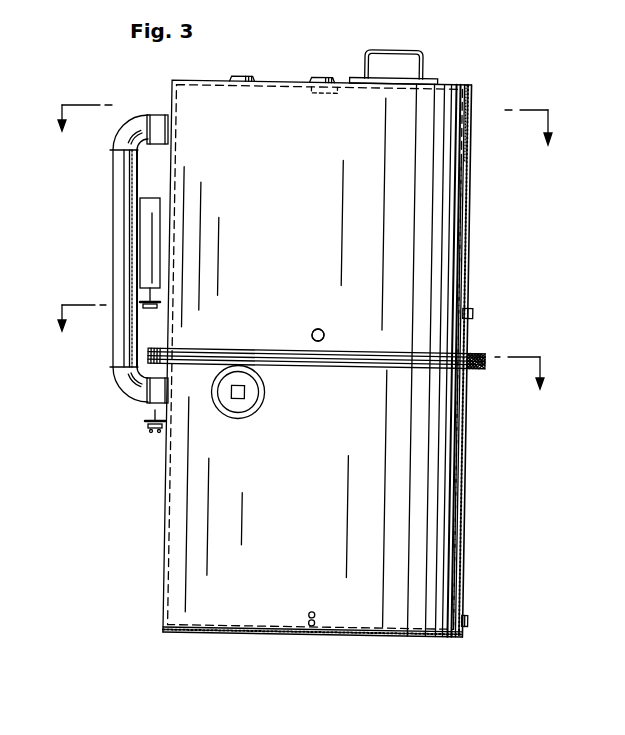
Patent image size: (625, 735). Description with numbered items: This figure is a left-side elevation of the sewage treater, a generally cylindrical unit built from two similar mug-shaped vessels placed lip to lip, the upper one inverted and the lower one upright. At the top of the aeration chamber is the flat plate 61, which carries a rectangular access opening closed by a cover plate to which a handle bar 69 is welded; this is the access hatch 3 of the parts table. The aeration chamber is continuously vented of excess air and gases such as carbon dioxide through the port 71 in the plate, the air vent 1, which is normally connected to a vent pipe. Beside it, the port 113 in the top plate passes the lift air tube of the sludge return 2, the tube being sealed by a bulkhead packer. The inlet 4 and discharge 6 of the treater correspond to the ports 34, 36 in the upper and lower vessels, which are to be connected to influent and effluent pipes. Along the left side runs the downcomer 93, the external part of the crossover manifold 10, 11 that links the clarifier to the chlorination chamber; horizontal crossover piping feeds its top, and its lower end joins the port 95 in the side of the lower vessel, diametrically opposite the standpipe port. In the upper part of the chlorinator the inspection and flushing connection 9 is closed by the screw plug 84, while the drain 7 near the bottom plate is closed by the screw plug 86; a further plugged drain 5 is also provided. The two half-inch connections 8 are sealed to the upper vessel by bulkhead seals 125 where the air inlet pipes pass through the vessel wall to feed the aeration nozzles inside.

The air vent 1 is at (252, 77).
The sludge return 2 is at (318, 76).
The access hatch 3 is at (432, 80).
The inlet 4 is at (488, 92).
The drain 5 is at (479, 302).
The discharge 6 is at (463, 428).
The drain 7 is at (470, 625).
The half-inch N.P.T. connection 8 is at (324, 335).
The inspection and flushing connection 9 is at (245, 392).
The crossover manifold 10 is at (167, 116).
The crossover manifold 11 is at (113, 263).
The port 34 is at (468, 121).
The port 36 is at (462, 423).
The flat plate 61 is at (282, 88).
The handle bar 69 is at (394, 50).
The port 71 is at (242, 77).
The screw plug 84 is at (252, 406).
The screw plug 86 is at (470, 615).
The downcomer 93 is at (115, 197).
The port 95 is at (180, 397).
The port 113 is at (335, 91).
The bulkhead seal 125 is at (316, 328).